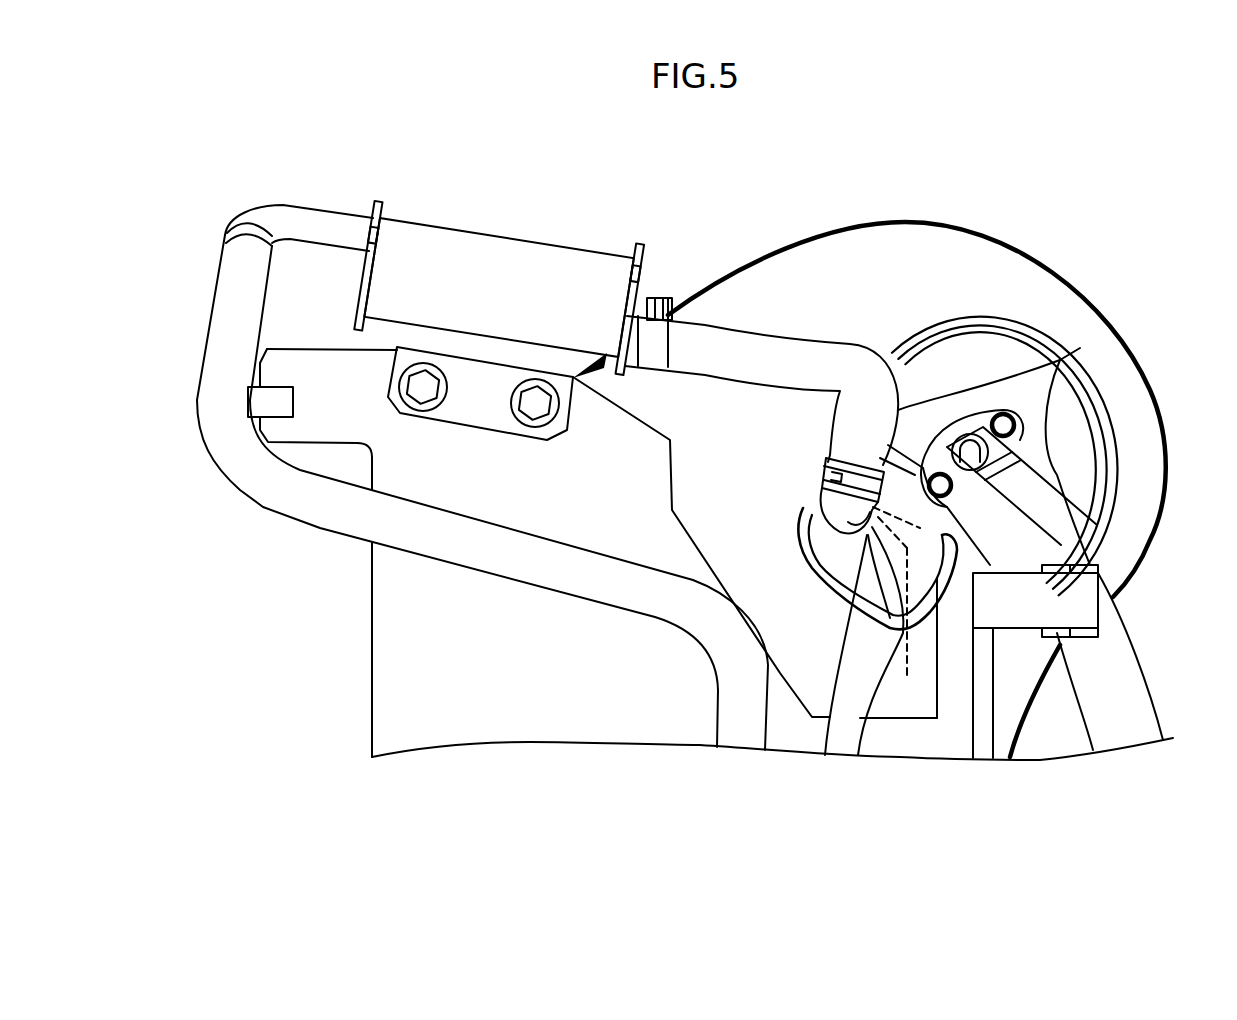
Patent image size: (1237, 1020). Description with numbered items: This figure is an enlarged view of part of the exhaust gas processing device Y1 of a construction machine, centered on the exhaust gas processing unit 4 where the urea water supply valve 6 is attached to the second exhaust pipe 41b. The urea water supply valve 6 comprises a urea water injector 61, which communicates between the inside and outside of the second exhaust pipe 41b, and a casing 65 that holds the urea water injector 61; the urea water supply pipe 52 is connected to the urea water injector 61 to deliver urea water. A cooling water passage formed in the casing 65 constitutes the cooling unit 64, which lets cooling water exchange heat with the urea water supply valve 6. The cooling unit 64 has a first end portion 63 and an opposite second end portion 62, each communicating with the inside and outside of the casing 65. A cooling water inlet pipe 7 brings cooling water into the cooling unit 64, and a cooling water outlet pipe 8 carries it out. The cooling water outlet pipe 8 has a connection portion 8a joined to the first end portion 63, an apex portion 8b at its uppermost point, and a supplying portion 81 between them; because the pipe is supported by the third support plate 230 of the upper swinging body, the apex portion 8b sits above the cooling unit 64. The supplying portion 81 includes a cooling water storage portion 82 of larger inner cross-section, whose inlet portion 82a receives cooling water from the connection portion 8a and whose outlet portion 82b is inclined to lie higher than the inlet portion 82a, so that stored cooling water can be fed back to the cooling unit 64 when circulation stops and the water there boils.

The exhaust gas processing unit 4 is at (954, 221).
The second exhaust pipe 41b is at (1063, 303).
The urea water supply valve 6 is at (1088, 384).
The casing 65 is at (1052, 440).
The urea water injector 61 is at (1018, 452).
The second end portion 62 is at (937, 705).
The first end portion 63 is at (888, 622).
The cooling unit 64 is at (907, 680).
The urea water supply pipe 52 is at (1098, 696).
The cooling water inlet pipe 7 is at (848, 703).
The cooling water outlet pipe 8 is at (312, 534).
The connection portion 8a is at (866, 520).
The apex portion 8b is at (242, 220).
The supplying portion 81 is at (674, 243).
The cooling water storage portion 82 is at (505, 257).
The inlet portion 82a is at (616, 331).
The outlet portion 82b is at (377, 222).
The third support plate 230 is at (373, 670).
The exhaust gas processing device Y1 is at (804, 196).